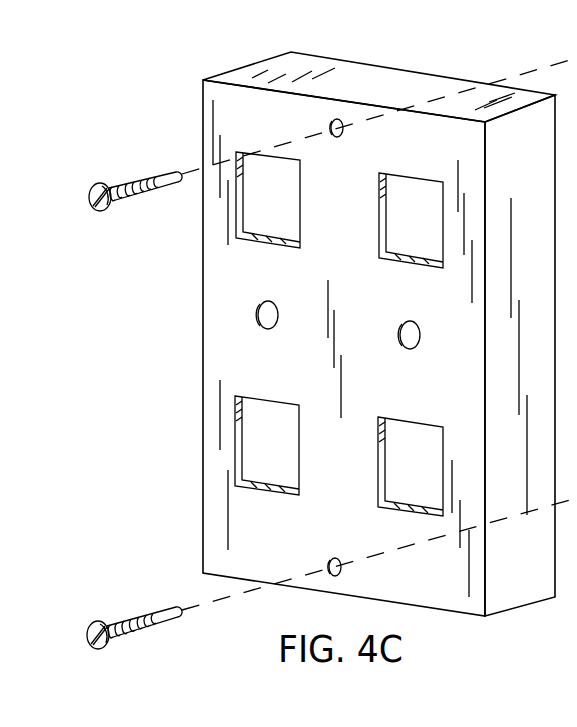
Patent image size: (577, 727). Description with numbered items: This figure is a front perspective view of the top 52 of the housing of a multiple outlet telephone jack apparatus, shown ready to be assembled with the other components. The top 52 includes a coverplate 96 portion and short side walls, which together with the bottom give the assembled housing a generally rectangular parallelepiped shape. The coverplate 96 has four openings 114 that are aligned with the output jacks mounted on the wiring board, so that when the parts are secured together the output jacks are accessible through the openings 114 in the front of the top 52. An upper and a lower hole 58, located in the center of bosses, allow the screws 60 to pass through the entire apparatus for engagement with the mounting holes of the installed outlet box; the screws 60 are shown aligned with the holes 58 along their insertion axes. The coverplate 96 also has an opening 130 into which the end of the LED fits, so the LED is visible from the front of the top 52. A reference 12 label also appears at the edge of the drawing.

The top 52 is at (397, 37).
The housing 12 is at (544, 326).
The holes 58 is at (330, 127).
The screws 60 is at (132, 182).
The coverplate 96 is at (220, 394).
The openings 114 is at (275, 217).
The opening 130 is at (258, 319).